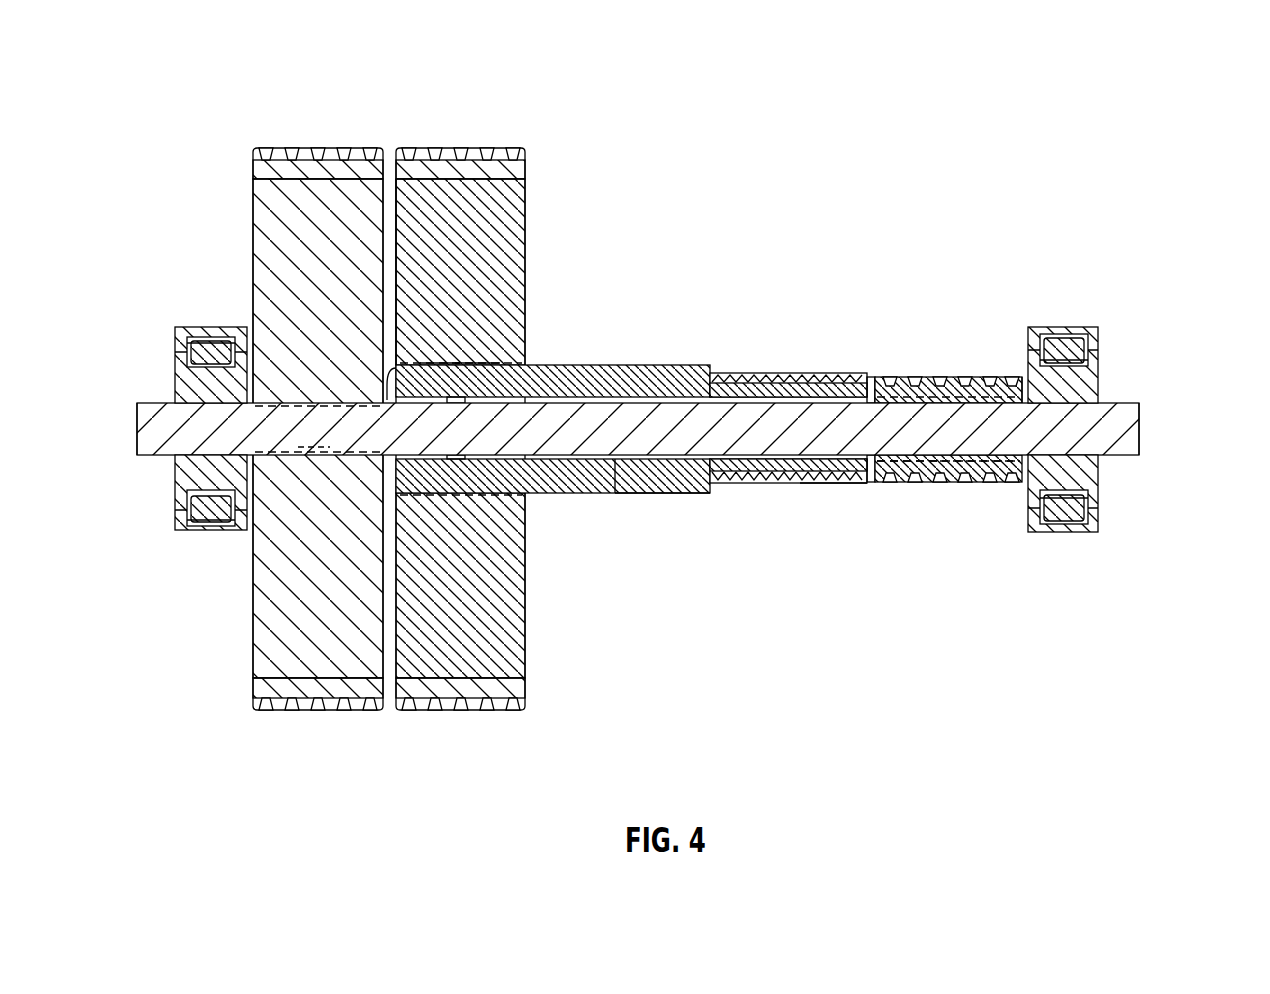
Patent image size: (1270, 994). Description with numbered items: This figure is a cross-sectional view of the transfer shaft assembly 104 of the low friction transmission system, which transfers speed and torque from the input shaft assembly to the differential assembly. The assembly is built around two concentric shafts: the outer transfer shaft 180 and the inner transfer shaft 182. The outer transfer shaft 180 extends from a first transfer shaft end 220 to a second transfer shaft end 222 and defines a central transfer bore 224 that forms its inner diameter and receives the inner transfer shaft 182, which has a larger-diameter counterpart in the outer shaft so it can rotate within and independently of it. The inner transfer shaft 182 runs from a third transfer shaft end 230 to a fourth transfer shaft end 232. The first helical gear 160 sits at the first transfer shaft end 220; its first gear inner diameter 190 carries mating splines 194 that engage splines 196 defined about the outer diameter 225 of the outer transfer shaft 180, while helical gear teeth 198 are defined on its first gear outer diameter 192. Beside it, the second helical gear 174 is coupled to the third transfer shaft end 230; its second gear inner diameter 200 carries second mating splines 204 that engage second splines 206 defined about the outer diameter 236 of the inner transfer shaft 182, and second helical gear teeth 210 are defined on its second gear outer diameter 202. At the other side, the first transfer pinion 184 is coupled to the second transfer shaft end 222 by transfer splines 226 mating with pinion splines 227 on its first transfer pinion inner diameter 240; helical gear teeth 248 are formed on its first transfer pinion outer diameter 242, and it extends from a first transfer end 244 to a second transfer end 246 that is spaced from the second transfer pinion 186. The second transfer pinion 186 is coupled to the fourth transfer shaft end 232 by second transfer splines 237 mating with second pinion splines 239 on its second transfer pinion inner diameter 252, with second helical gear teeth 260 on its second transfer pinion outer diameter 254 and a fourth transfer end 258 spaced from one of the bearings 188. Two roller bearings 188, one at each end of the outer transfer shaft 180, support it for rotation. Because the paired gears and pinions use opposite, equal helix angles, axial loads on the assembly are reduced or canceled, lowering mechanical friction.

The transfer shaft assembly 104 is at (1057, 152).
The first helical gear 160 is at (494, 440).
The second helical gear 174 is at (317, 435).
The outer transfer shaft 180 is at (548, 431).
The inner transfer shaft 182 is at (662, 483).
The first transfer pinion 184 is at (795, 424).
The second transfer pinion 186 is at (964, 420).
The bearings 188 is at (665, 388).
The first gear inner diameter 190 is at (502, 362).
The first gear outer diameter 192 is at (422, 712).
The mating splines 194 is at (458, 368).
The splines 196 is at (500, 497).
The helical gear teeth 198 is at (510, 712).
The second gear inner diameter 200 is at (270, 458).
The second gear outer diameter 202 is at (328, 712).
The second mating splines 204 is at (298, 456).
The second splines 206 is at (330, 448).
The second helical gear teeth 210 is at (263, 712).
The first transfer shaft end 220 is at (388, 368).
The second transfer shaft end 222 is at (893, 377).
The central transfer bore 224 is at (615, 459).
The outer diameter 225 is at (420, 368).
The transfer splines 226 is at (775, 373).
The pinion splines 227 is at (795, 483).
The third transfer shaft end 230 is at (148, 456).
The fourth transfer shaft end 232 is at (665, 489).
The outer diameter 236 is at (367, 456).
The second transfer splines 237 is at (905, 483).
The second pinion splines 239 is at (978, 473).
The first transfer pinion inner diameter 240 is at (773, 483).
The first transfer pinion outer diameter 242 is at (740, 373).
The first transfer end 244 is at (715, 373).
The second transfer end 246 is at (872, 377).
The helical gear teeth 248 is at (833, 483).
The second transfer pinion inner diameter 252 is at (998, 483).
The second transfer pinion outer diameter 254 is at (1010, 377).
The fourth transfer end 258 is at (1070, 385).
The second helical gear teeth 260 is at (952, 377).